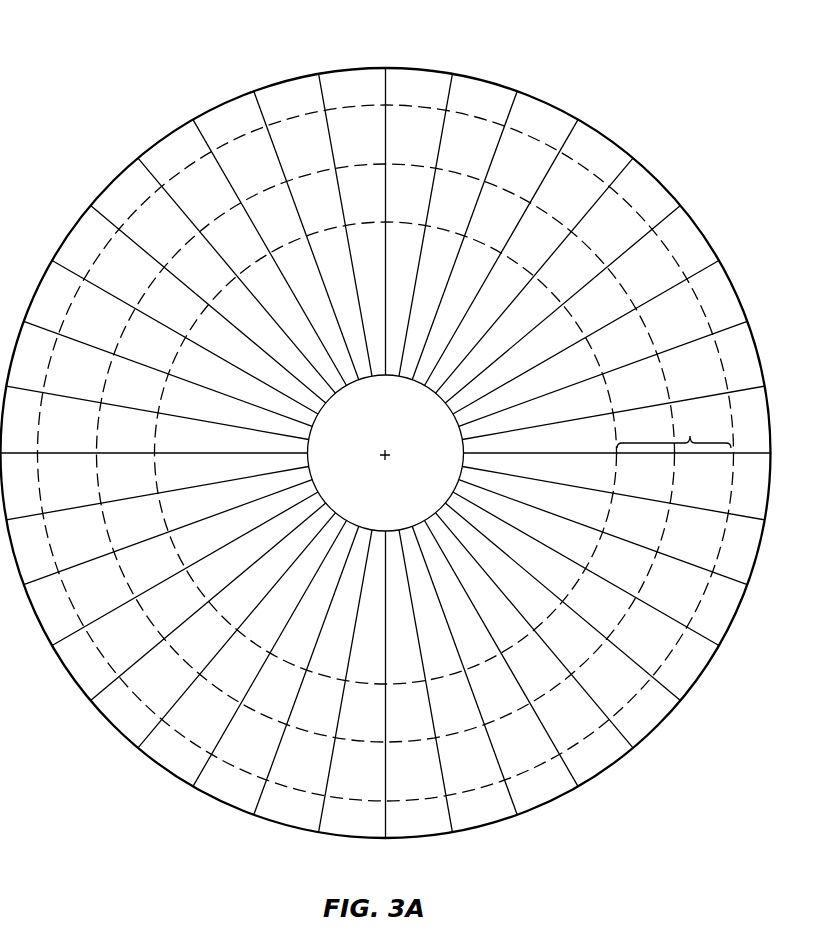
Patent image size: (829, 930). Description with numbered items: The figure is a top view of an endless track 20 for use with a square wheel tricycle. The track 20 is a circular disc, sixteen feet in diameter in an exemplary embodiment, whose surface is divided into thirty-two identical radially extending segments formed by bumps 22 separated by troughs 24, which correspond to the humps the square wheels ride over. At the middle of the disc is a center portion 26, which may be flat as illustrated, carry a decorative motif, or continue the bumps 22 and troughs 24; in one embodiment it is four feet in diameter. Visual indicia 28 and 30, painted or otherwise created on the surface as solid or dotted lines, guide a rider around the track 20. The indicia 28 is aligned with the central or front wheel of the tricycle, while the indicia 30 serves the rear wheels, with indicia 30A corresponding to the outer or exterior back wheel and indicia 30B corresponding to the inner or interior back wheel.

The endless track 20 is at (184, 63).
The bumps 22 is at (262, 162).
The troughs 24 is at (385, 125).
The center portion 26 is at (388, 450).
The visual indicia 28 is at (680, 207).
The visual indicia 30 is at (713, 313).
The indicia for outer back wheel 30A is at (682, 270).
The indicia for inner back wheel 30B is at (625, 292).